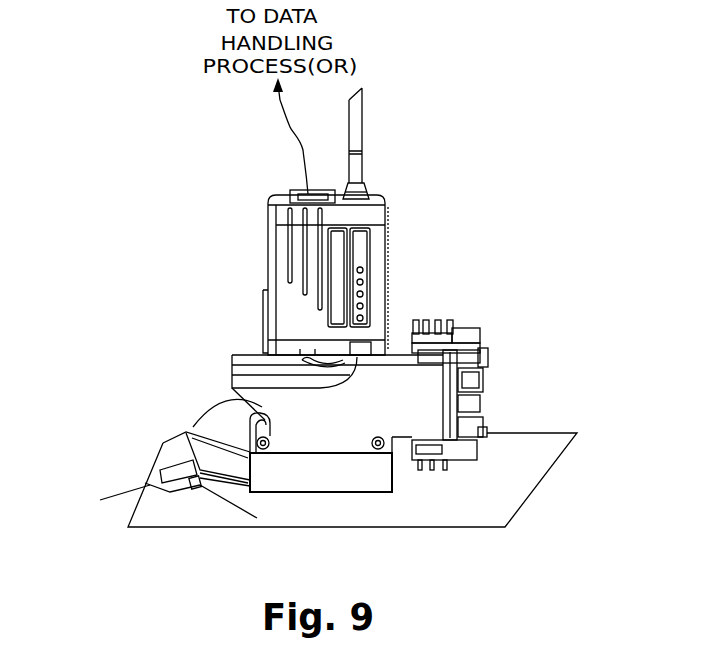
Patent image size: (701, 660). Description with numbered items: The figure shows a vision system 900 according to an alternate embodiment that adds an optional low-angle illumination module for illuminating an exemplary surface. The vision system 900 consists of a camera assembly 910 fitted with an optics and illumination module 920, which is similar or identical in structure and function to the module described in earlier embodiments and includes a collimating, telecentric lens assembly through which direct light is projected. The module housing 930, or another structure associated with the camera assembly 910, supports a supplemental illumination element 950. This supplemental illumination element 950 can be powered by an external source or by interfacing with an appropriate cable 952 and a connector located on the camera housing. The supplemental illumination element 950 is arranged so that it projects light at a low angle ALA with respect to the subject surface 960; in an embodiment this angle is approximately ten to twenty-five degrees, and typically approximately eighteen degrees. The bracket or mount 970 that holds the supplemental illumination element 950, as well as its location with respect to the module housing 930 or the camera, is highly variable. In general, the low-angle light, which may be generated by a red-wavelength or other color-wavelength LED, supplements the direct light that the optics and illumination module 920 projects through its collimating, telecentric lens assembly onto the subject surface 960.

The vision system 900 is at (398, 156).
The camera assembly 910 is at (395, 235).
The optics and illumination module 920 is at (396, 348).
The module housing 930 is at (250, 403).
The supplemental illumination element 950 is at (162, 437).
The cable 952 is at (318, 389).
The subject surface 960 is at (526, 476).
The bracket or mount 970 is at (225, 480).
The low angle ALA is at (148, 490).